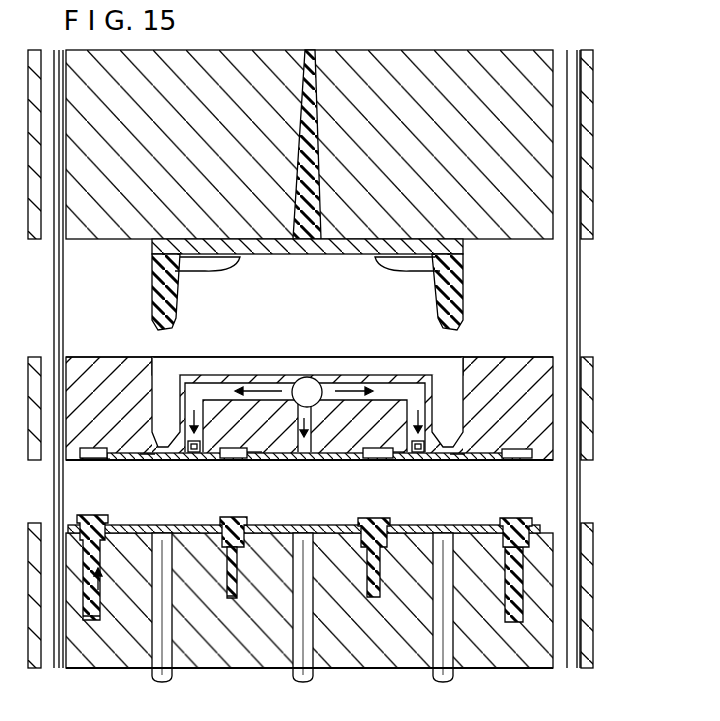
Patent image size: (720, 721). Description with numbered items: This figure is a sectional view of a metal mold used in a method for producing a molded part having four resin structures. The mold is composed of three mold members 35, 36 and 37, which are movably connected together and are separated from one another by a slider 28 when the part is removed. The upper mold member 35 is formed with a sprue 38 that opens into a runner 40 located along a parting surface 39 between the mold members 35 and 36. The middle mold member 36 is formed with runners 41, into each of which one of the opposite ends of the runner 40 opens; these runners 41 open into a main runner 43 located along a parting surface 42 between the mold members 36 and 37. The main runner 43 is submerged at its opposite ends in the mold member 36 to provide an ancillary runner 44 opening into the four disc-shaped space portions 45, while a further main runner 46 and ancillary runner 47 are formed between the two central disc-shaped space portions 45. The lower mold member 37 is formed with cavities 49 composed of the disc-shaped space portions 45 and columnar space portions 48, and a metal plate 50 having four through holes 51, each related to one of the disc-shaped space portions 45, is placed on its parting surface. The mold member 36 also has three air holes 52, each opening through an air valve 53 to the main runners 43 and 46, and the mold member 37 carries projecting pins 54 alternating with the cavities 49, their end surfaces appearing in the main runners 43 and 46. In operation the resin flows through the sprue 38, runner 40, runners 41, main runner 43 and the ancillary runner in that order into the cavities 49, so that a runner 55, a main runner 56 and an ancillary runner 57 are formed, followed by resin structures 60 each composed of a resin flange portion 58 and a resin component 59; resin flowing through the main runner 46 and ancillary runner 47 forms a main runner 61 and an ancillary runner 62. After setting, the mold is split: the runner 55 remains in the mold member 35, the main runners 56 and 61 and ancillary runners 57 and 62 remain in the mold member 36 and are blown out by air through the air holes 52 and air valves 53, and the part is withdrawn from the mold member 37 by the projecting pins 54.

The slider 28 is at (575, 666).
The mold member 35 is at (545, 153).
The mold member 36 is at (548, 405).
The mold member 37 is at (540, 602).
The sprue 38 is at (305, 142).
The parting surface 39 is at (513, 243).
The runner 40 is at (253, 367).
The runners 41 is at (170, 460).
The parting surface 42 is at (434, 460).
The main runner 43 is at (474, 453).
The ancillary runner 44 is at (108, 459).
The disc-shaped space portions 45 is at (230, 460).
The main runner 46 is at (288, 460).
The ancillary runner 47 is at (360, 460).
The columnar space portions 48 is at (515, 622).
The cavities 49 is at (236, 598).
The metal plate 50 is at (450, 532).
The through holes 51 is at (520, 520).
The air holes 52 is at (288, 390).
The air valve 53 is at (200, 447).
The projecting pins 54 is at (310, 682).
The runner 55 is at (192, 268).
The main runner 56 is at (458, 462).
The ancillary runner 57 is at (398, 460).
The resin flange portion 58 is at (235, 518).
The resin component 59 is at (226, 568).
The resin structures 60 is at (88, 610).
The main runner 61 is at (318, 460).
The ancillary runner 62 is at (256, 452).